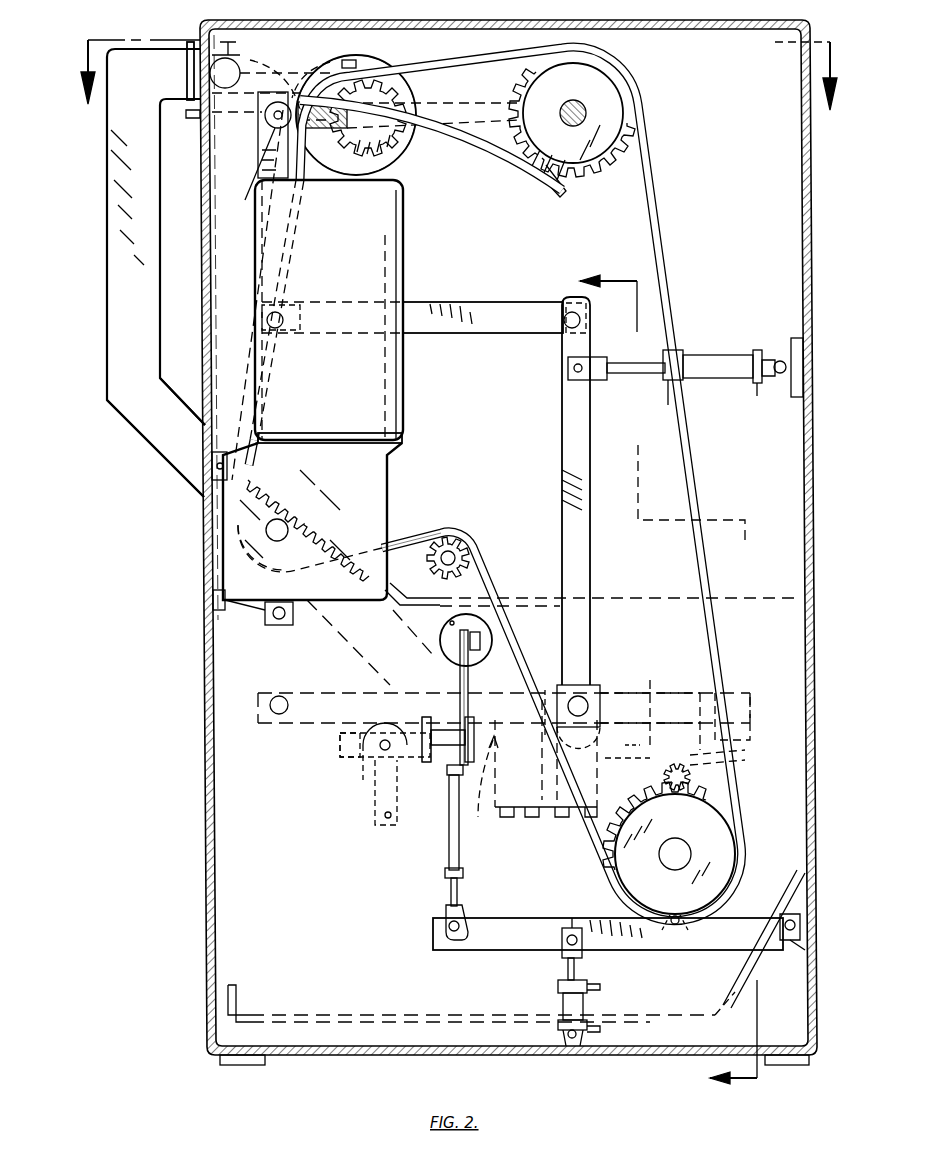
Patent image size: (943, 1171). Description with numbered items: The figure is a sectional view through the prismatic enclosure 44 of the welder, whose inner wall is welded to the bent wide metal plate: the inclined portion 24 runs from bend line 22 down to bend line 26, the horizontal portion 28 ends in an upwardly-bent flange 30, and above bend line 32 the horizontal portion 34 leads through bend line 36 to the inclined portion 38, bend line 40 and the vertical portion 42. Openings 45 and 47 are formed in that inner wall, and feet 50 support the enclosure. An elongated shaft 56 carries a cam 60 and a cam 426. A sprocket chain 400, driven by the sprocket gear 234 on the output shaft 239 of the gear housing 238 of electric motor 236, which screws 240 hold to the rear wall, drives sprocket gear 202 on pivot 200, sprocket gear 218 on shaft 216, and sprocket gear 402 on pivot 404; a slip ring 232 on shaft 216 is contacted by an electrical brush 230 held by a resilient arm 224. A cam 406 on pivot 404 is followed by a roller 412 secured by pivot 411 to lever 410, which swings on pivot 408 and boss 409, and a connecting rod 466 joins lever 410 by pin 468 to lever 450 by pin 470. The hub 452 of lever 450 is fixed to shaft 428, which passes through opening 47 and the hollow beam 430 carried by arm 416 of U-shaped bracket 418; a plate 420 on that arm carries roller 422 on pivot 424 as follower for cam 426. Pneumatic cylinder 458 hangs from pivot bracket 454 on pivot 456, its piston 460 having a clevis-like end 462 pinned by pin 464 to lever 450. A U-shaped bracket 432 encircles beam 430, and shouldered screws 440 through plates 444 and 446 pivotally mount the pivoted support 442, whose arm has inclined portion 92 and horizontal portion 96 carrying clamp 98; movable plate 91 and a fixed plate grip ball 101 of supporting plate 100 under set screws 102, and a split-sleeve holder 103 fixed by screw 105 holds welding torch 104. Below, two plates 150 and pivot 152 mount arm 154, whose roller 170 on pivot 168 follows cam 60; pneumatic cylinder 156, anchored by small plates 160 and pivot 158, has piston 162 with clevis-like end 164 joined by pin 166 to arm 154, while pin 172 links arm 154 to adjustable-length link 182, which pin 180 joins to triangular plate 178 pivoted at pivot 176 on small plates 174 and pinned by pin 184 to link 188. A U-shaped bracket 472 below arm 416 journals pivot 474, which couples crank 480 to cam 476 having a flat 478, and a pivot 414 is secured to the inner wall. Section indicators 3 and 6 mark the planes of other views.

The bend line 22 is at (806, 870).
The downwardly and rearwardly-inclined portion 24 is at (760, 950).
The bend line 26 is at (722, 1012).
The horizontally-directed, rearwardly-extending portion 28 is at (350, 1015).
The upwardly-bent flange 30 is at (240, 995).
The bend line 32 is at (806, 598).
The horizontally-directed portion 34 is at (645, 598).
The bend line 36 is at (395, 620).
The upwardly and rearwardly-inclining portion 38 is at (385, 515).
The bend line 40 is at (203, 431).
The vertically-directed portion 42 is at (204, 300).
The prismatic enclosure 44 is at (540, 24).
The opening 45 is at (440, 630).
The opening 47 is at (635, 743).
The feet 50 is at (232, 1065).
The elongated shaft 56 is at (676, 870).
The cam 60 is at (720, 830).
The movable plate 91 is at (268, 120).
The rearwardly and upwardly-inclined portion 92 is at (168, 462).
The horizontally-directed portion 96 is at (153, 56).
The clamp 98 is at (250, 45).
The supporting plate 100 is at (298, 52).
The ball 101 is at (268, 72).
The set screws 102 is at (233, 30).
The split-sleeve holder 103 is at (405, 90).
The welding torch 104 is at (432, 102).
The screw 105 is at (365, 55).
The plates 150 is at (806, 950).
The pivot 152 is at (782, 915).
The arm 154 is at (468, 950).
The pneumatic cylinder 156 is at (587, 1005).
The pivot 158 is at (572, 1046).
The small plates 160 is at (565, 1040).
The piston 162 is at (568, 970).
The clevis-like upper end 164 is at (582, 952).
The pin 166 is at (568, 928).
The pivot 168 is at (672, 925).
The roller 170 is at (685, 935).
The pin 172 is at (446, 925).
The small plates 174 is at (470, 725).
The pivot 176 is at (425, 762).
The generally-triangular plate 178 is at (460, 680).
The pin 180 is at (445, 760).
The adjustable-length link 182 is at (459, 850).
The pin 184 is at (482, 640).
The adjustable-length link 188 is at (490, 600).
The pivot 200 is at (455, 556).
The sprocket gear 202 is at (452, 535).
The shaft 216 is at (586, 105).
The sprocket gear 218 is at (595, 170).
The elongated resilient arm 224 is at (475, 145).
The electrical brush 230 is at (552, 188).
The slip ring 232 is at (615, 115).
The sprocket gear 234 is at (310, 495).
The electric motor 236 is at (403, 232).
The gear housing 238 is at (387, 472).
The output shaft 239 is at (268, 532).
The screws 240 is at (212, 490).
The sprocket chain 400 is at (668, 240).
The sprocket gear 402 is at (395, 150).
The pivot 404 is at (360, 160).
The cam 406 is at (405, 55).
The pivot 408 is at (278, 625).
The boss 409 is at (250, 612).
The lever 410 is at (258, 176).
The pivot 411 is at (312, 90).
The roller 412 is at (260, 140).
The pivot 414 is at (278, 714).
The left-hand arm 416 is at (345, 693).
The U-shaped bracket 418 is at (745, 690).
The plate 420 is at (725, 752).
The roller 422 is at (722, 764).
The pivot 424 is at (692, 778).
The cam 426 is at (742, 845).
The shaft 428 is at (600, 700).
The beam 430 is at (627, 763).
The U-shaped bracket 432 is at (635, 725).
The shouldered screws 440 is at (590, 650).
The pivoted support 442 is at (477, 812).
The flat plate 444 is at (565, 660).
The flat plate 446 is at (540, 818).
The lever 450 is at (562, 455).
The hub 452 is at (598, 686).
The pivot bracket 454 is at (797, 338).
The pivot 456 is at (778, 376).
The pneumatic cylinder 458 is at (715, 355).
The piston 460 is at (632, 374).
The clevis-like outer end 462 is at (580, 382).
The pin 464 is at (568, 372).
The connecting rod 466 is at (487, 302).
The pin 468 is at (290, 325).
The pin 470 is at (582, 318).
The U-shaped bracket 472 is at (345, 758).
The pivot 474 is at (345, 740).
The cam 476 is at (370, 785).
The flat 478 is at (372, 818).
The crank 480 is at (385, 822).
The section line 3 is at (455, 89).
The section line 6 is at (658, 684).